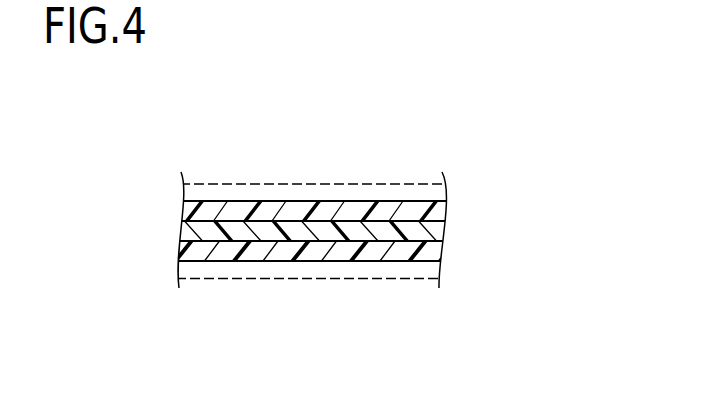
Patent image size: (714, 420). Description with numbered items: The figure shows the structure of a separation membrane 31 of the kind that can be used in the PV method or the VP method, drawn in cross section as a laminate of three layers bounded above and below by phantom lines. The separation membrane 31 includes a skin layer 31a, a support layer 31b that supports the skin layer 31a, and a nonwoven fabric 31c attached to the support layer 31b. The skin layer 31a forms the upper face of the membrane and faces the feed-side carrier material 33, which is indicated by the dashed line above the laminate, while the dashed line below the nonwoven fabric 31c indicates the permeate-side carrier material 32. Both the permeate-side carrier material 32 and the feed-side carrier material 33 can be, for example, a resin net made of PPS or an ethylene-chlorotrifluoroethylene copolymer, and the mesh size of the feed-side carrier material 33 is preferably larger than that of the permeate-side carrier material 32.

The separation membrane 31 is at (391, 238).
The skin layer 31a is at (446, 208).
The support layer 31b is at (445, 233).
The nonwoven fabric 31c is at (366, 274).
The permeate-side carrier material 32 is at (312, 271).
The feed-side carrier material 33 is at (319, 192).